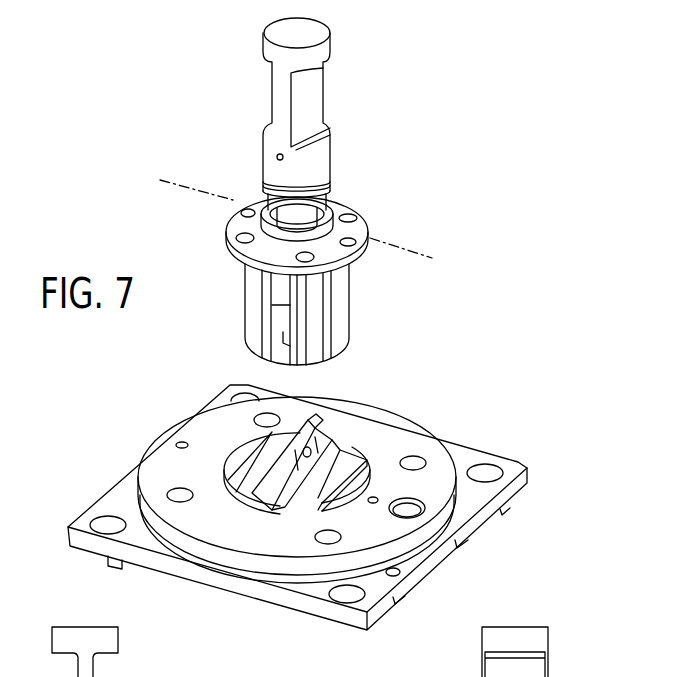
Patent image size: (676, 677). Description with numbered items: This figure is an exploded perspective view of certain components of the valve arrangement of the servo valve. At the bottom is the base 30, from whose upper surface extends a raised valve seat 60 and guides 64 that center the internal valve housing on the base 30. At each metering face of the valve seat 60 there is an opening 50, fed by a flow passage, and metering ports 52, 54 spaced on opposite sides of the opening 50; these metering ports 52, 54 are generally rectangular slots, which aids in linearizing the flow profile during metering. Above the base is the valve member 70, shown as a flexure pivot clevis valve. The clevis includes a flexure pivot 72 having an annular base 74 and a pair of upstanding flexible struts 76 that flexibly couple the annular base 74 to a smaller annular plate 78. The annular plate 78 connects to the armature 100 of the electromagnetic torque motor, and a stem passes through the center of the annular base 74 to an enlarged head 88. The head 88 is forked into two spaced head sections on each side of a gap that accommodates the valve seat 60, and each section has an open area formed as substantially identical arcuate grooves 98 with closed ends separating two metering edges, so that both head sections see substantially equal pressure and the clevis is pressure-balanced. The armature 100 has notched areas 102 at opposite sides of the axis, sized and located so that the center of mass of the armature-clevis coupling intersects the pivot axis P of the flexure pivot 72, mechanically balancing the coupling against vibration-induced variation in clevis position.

The base 30 is at (467, 457).
The opening 50 is at (352, 508).
The metering port 52 is at (300, 467).
The metering port 54 is at (327, 508).
The valve seat 60 is at (307, 423).
The guides 64 is at (350, 483).
The valve member 70 is at (279, 275).
The flexure pivot 72 is at (374, 219).
The annular base 74 is at (250, 247).
The flexible struts 76 is at (315, 212).
The annular plate 78 is at (264, 186).
The head 88 is at (308, 315).
The arcuate grooves 98 is at (287, 340).
The armature 100 is at (317, 37).
The notched areas 102 is at (312, 100).
The pivot axis P is at (403, 248).